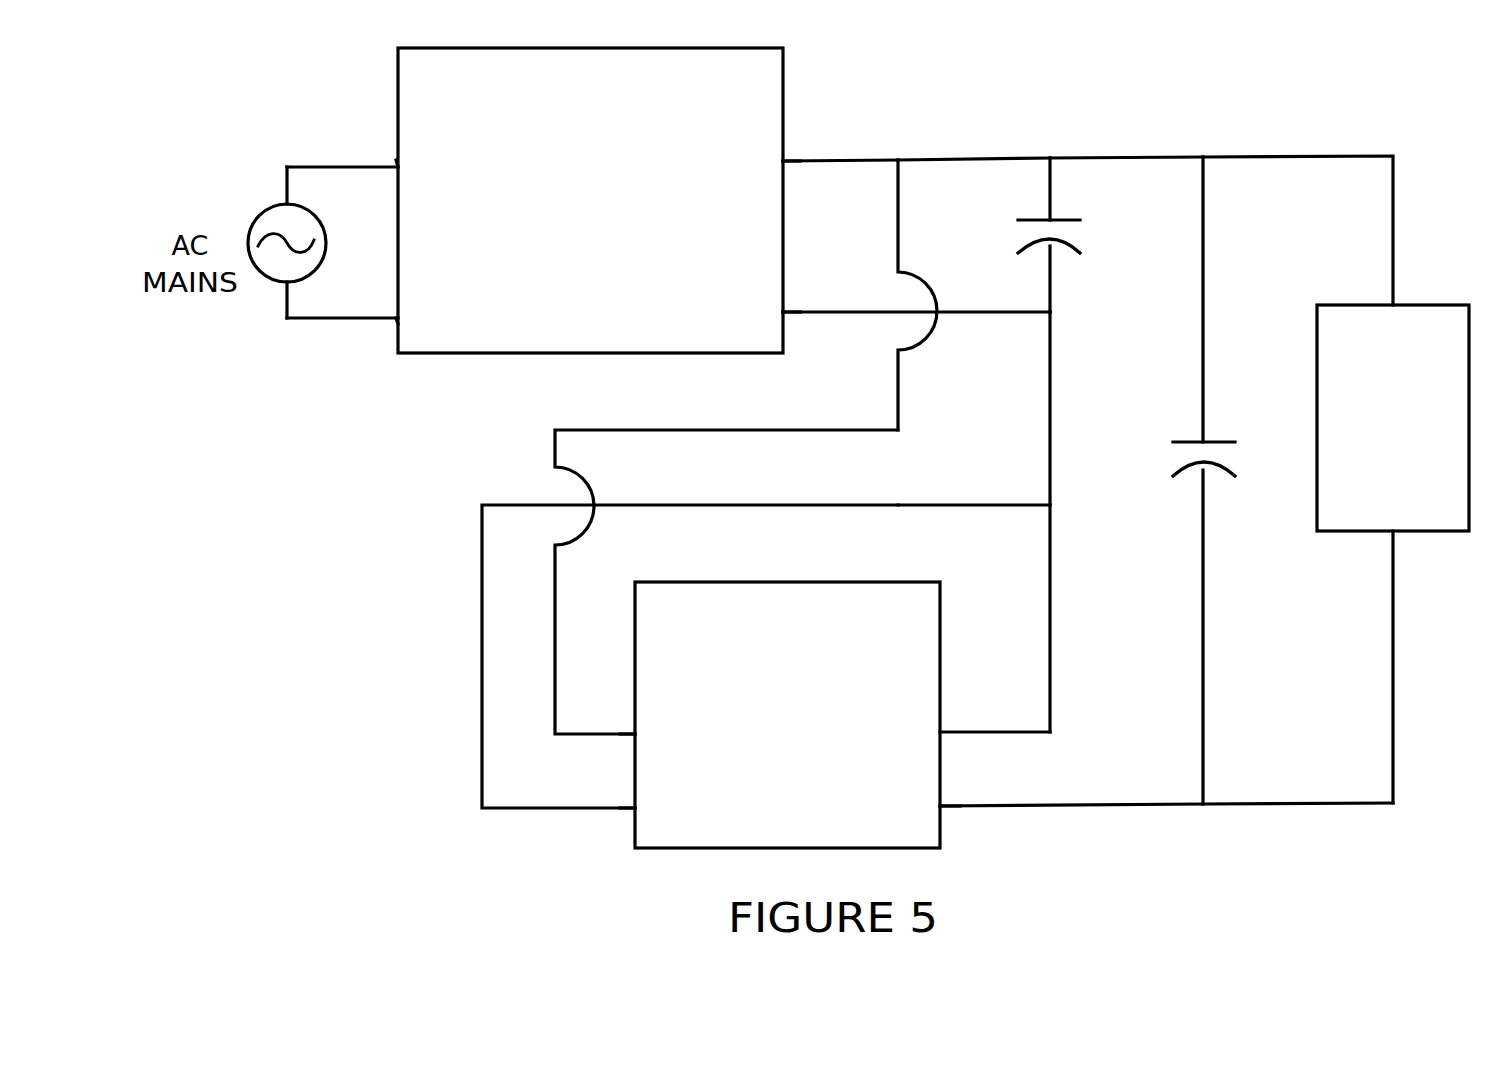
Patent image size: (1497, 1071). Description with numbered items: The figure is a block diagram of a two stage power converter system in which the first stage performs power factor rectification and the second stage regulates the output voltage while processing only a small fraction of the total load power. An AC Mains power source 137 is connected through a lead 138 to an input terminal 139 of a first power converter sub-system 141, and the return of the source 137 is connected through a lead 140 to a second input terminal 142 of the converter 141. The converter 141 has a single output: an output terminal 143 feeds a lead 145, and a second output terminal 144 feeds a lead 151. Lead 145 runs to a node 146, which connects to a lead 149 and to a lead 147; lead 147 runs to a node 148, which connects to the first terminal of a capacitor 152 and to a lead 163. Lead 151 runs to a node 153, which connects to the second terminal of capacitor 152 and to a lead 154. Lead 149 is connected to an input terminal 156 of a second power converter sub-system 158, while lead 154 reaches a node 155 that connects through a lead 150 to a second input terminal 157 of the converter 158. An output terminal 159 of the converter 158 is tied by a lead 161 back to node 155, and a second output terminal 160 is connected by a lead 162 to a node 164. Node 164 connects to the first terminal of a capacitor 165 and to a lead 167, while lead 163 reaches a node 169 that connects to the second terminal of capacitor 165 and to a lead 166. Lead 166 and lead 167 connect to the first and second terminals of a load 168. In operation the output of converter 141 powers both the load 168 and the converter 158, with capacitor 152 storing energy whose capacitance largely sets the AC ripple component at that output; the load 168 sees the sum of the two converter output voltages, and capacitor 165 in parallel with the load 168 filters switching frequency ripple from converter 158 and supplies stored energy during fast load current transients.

The AC Mains power source 137 is at (270, 210).
The lead 138 is at (337, 165).
The input terminal 139 is at (396, 158).
The lead 140 is at (300, 322).
The first power converter sub-system 141 is at (397, 75).
The second input terminal 142 is at (397, 322).
The output terminal 143 is at (790, 158).
The second output terminal 144 is at (788, 311).
The lead 145 is at (828, 158).
The node 146 is at (902, 158).
The lead 147 is at (970, 157).
The node 148 is at (1050, 157).
The lead 149 is at (555, 445).
The lead 150 is at (482, 550).
The lead 151 is at (885, 315).
The capacitor 152 is at (1063, 218).
The node 153 is at (1052, 312).
The lead 154 is at (1053, 462).
The node 155 is at (1050, 500).
The input terminal 156 is at (633, 737).
The second input terminal 157 is at (633, 812).
The second power converter sub-system 158 is at (793, 582).
The output terminal 159 is at (942, 732).
The second output terminal 160 is at (942, 808).
The lead 161 is at (1055, 648).
The lead 162 is at (1138, 804).
The lead 163 is at (1122, 157).
The node 164 is at (1205, 804).
The capacitor 165 is at (1213, 442).
The lead 166 is at (1393, 197).
The lead 167 is at (1393, 745).
The load 168 is at (1415, 310).
The node 169 is at (1205, 158).